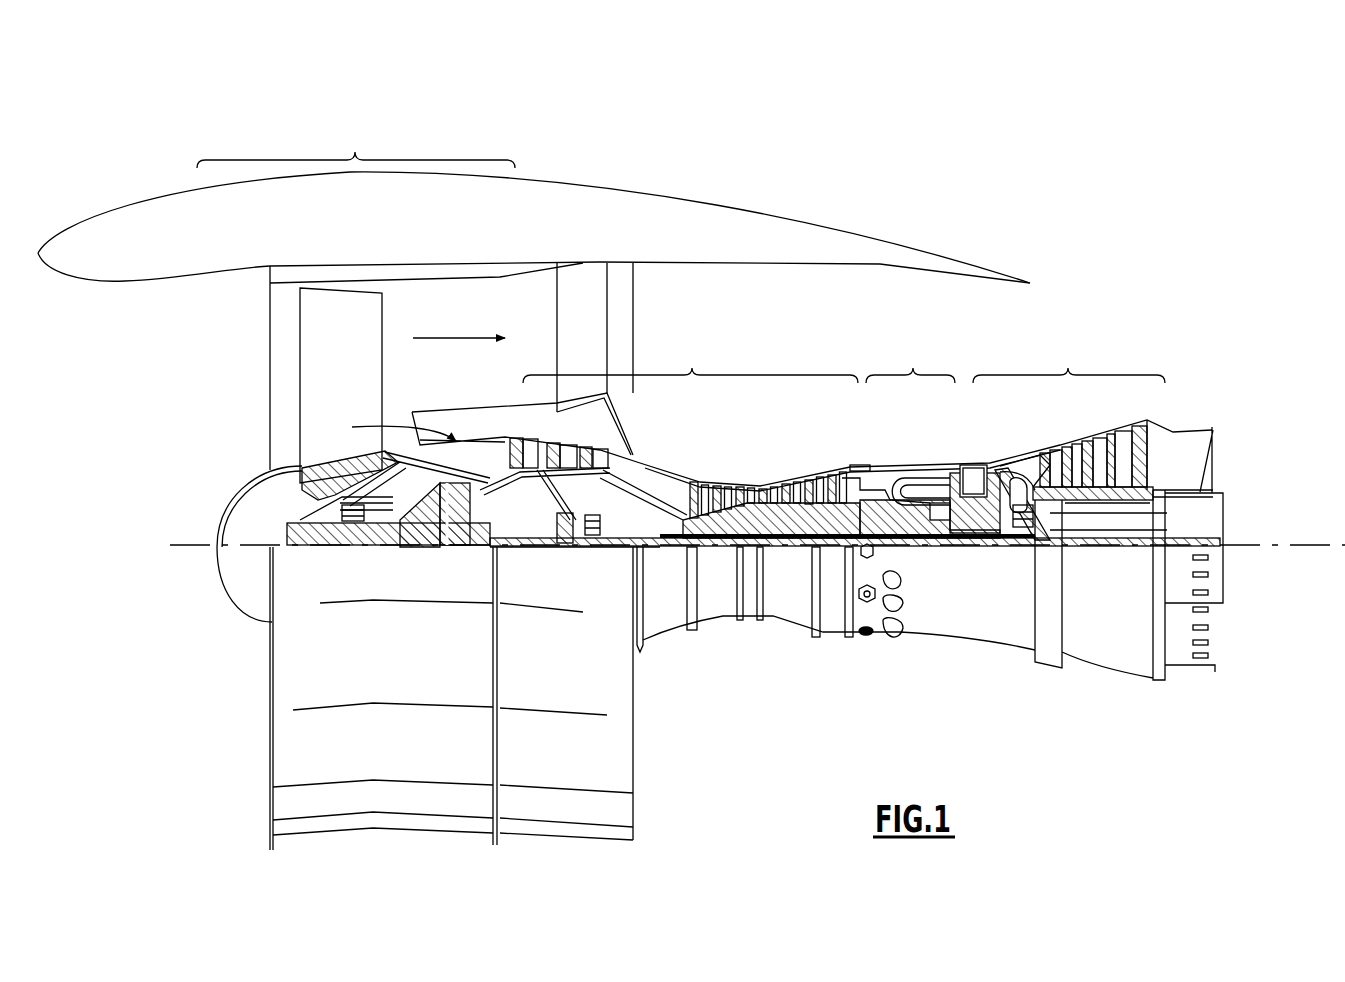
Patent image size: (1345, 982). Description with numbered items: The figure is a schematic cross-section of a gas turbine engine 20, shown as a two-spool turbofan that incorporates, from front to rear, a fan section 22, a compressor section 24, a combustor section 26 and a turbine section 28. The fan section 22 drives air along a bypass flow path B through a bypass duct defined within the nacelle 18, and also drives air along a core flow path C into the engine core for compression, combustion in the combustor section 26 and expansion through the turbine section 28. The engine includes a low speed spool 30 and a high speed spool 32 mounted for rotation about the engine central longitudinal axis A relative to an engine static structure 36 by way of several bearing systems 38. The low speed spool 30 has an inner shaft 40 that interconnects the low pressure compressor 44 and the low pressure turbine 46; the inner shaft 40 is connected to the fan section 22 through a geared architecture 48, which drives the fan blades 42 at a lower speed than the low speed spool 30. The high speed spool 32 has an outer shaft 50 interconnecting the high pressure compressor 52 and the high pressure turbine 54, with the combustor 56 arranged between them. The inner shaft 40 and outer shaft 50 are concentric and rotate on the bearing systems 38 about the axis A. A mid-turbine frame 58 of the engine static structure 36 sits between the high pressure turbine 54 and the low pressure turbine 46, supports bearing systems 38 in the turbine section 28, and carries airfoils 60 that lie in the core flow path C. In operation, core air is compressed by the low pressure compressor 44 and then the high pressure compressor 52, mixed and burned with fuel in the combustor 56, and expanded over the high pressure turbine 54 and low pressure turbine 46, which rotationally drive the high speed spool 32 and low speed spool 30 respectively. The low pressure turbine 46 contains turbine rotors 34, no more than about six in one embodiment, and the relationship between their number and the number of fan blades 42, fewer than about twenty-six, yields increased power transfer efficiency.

The nacelle 18 is at (644, 210).
The gas turbine engine 20 is at (1096, 283).
The fan section 22 is at (356, 144).
The compressor section 24 is at (690, 359).
The combustor section 26 is at (910, 359).
The turbine section 28 is at (1069, 359).
The low speed spool 30 is at (793, 556).
The high speed spool 32 is at (830, 517).
The turbine rotors 34 is at (1120, 512).
The engine static structure 36 is at (833, 636).
The bearing systems 38 is at (345, 547).
The inner shaft 40 is at (650, 547).
The fan blades 42 is at (358, 394).
The low pressure compressor 44 is at (570, 447).
The low pressure turbine 46 is at (1100, 437).
The geared architecture 48 is at (458, 527).
The outer shaft 50 is at (922, 530).
The high pressure compressor 52 is at (765, 505).
The high pressure turbine 54 is at (972, 467).
The combustor 56 is at (906, 488).
The mid-turbine frame 58 is at (1018, 455).
The airfoils 60 is at (1032, 505).
The engine central longitudinal axis A is at (1300, 545).
The bypass flow path B is at (450, 337).
The core flow path C is at (395, 427).